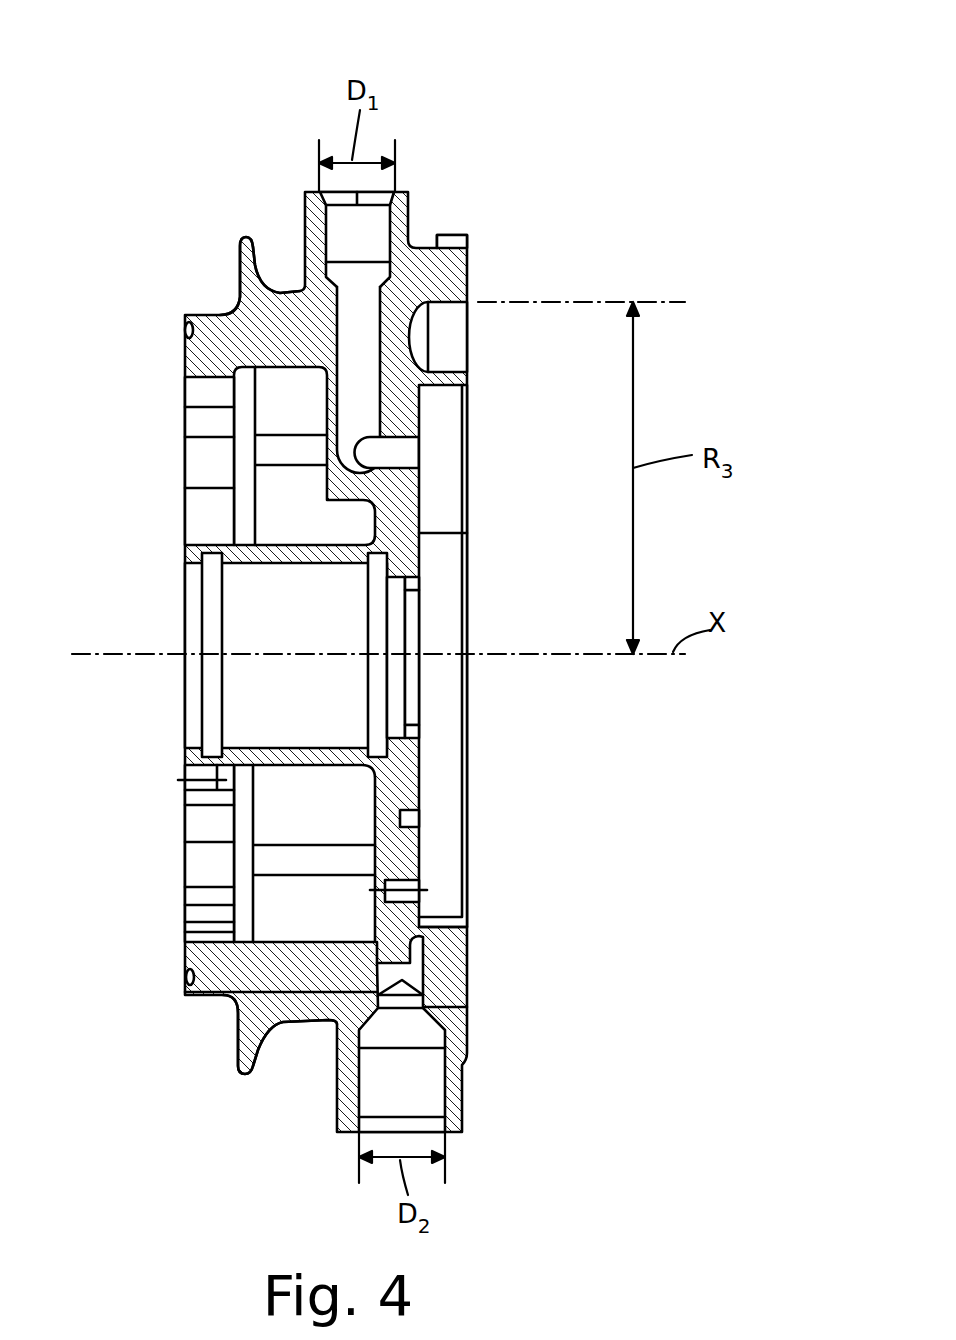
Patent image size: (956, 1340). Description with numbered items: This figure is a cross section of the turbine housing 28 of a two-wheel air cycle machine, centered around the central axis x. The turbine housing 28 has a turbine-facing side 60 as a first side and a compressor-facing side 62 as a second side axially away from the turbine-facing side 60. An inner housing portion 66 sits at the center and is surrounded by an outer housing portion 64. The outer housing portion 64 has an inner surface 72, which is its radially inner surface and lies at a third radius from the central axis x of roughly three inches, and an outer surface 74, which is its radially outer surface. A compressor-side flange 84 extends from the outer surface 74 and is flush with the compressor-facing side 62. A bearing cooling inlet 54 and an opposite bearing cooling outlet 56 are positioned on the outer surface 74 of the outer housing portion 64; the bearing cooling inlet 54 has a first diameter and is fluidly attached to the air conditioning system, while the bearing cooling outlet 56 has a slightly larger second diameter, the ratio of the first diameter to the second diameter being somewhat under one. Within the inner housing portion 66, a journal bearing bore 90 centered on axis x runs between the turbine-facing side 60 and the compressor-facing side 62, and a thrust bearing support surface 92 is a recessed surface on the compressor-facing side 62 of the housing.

The turbine housing 28 is at (637, 125).
The bearing cooling inlet 54 is at (382, 190).
The bearing cooling outlet 56 is at (433, 1133).
The turbine-facing side 60 is at (185, 955).
The compressor-facing side 62 is at (467, 973).
The outer housing portion 64 is at (241, 232).
The inner housing portion 66 is at (180, 577).
The inner surface 72 is at (458, 302).
The outer surface 74 is at (292, 1000).
The compressor-side flange 84 is at (450, 235).
The journal bearing bore 90 is at (185, 720).
The thrust bearing support surface 92 is at (422, 757).